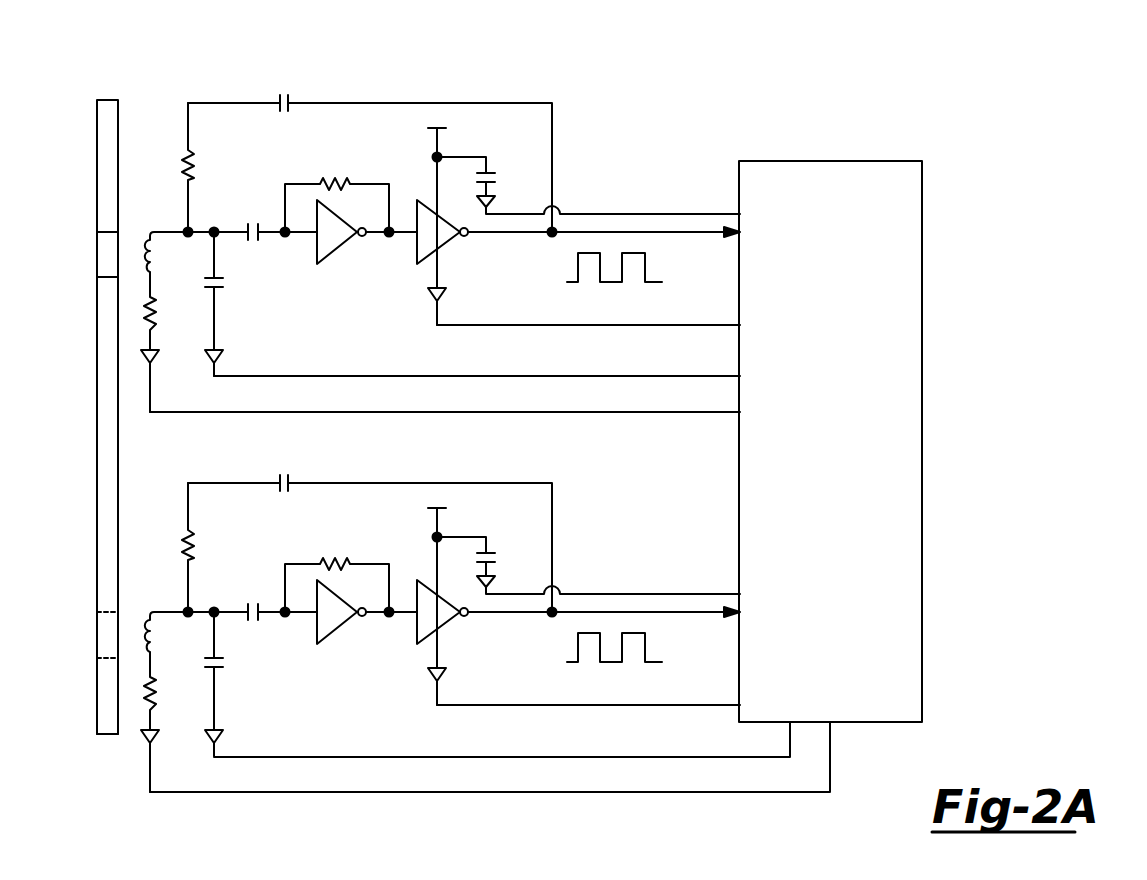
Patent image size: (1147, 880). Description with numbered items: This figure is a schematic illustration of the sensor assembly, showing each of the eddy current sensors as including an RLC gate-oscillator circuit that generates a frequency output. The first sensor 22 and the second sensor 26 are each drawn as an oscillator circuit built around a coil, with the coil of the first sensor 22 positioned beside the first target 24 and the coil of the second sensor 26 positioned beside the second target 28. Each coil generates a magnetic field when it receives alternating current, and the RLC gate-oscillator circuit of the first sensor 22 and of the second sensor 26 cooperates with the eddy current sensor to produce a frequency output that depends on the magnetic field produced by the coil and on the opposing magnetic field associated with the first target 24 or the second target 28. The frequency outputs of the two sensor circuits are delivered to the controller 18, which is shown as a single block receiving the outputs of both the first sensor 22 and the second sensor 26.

The controller 18 is at (902, 517).
The first sensor 22 is at (395, 230).
The first target 24 is at (108, 110).
The second sensor 26 is at (440, 611).
The second target 28 is at (107, 720).